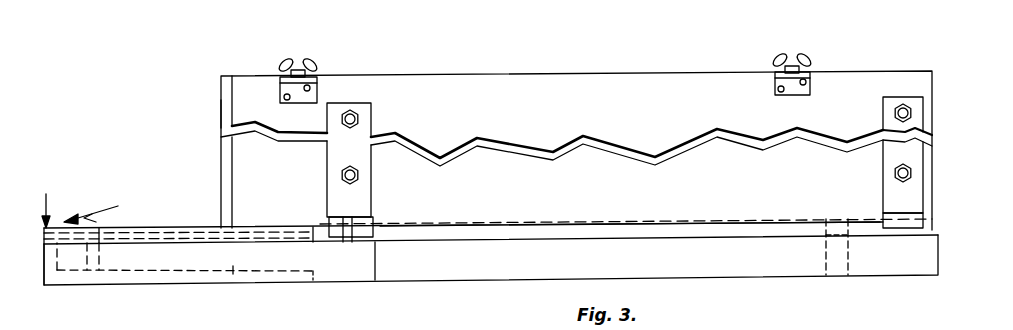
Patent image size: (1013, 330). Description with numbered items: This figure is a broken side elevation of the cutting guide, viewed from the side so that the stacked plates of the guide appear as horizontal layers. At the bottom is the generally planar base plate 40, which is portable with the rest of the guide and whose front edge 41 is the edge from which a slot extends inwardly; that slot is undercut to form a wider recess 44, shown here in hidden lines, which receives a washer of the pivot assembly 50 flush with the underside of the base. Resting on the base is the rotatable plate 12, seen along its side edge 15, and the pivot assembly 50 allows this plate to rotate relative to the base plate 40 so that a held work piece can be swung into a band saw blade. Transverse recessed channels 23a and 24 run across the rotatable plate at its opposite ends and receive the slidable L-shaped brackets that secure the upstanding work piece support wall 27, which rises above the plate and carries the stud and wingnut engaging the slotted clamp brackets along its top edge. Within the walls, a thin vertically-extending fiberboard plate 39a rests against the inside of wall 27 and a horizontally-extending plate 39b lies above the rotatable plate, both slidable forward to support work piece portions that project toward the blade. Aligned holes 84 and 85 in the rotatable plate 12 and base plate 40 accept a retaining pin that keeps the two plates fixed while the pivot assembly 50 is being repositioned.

The rotatable plate 12 is at (51, 202).
The side edge 15 is at (606, 197).
The recessed channel 23a is at (338, 242).
The recessed channel 24 is at (885, 226).
The work piece support wall 27 is at (570, 108).
The vertically-extending plate 39a is at (221, 92).
The horizontally-extending plate 39b is at (182, 228).
The base plate 40 is at (503, 254).
The front edge 41 is at (44, 272).
The recess 44 is at (236, 274).
The pivot assembly 50 is at (103, 210).
The hole 84 is at (830, 216).
The hole 85 is at (830, 276).